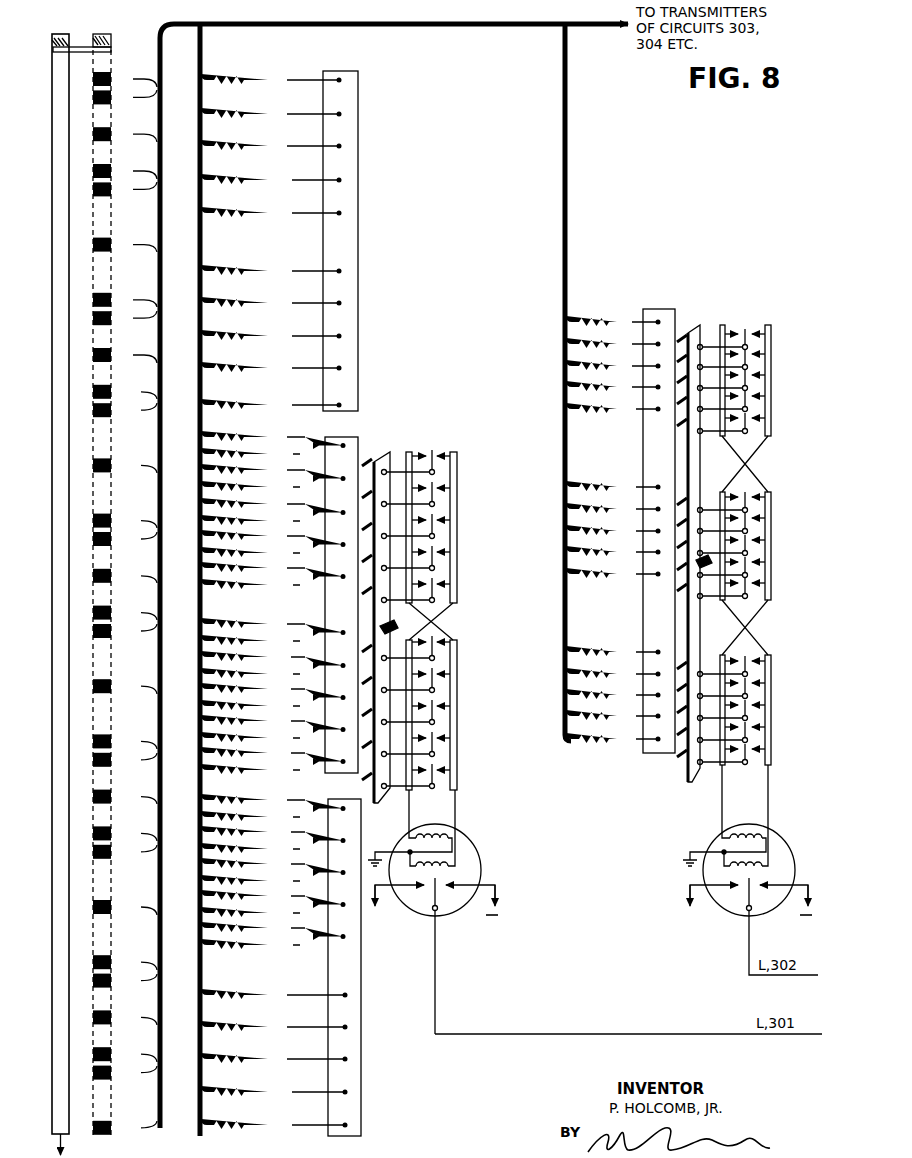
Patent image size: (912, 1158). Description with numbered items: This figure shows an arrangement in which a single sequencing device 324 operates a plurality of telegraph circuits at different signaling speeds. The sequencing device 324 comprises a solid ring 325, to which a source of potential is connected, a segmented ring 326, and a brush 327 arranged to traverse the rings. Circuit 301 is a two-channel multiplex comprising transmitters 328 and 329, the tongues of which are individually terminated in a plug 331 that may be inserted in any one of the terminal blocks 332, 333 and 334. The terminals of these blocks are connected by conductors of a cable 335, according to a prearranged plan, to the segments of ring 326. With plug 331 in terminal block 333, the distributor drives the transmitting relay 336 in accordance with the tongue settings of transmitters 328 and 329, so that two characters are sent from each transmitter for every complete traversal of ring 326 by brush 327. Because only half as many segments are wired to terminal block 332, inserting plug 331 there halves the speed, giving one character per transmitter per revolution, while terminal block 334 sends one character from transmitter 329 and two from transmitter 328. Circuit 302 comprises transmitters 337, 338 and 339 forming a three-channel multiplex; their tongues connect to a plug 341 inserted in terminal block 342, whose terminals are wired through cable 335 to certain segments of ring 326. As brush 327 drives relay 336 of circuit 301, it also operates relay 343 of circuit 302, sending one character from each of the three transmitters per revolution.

The circuit 301 is at (356, 757).
The circuit 302 is at (692, 611).
The sequencing device 324 is at (80, 41).
The solid ring 325 is at (62, 26).
The segmented ring 326 is at (109, 38).
The brush 327 is at (108, 50).
The transmitter 328 is at (461, 488).
The transmitter 329 is at (462, 673).
The plug 331 is at (378, 455).
The terminal block 332 is at (350, 134).
The terminal block 333 is at (350, 437).
The terminal block 334 is at (361, 980).
The cable 335 is at (368, 26).
The transmitting relay 336 is at (466, 846).
The transmitter 337 is at (773, 360).
The transmitter 338 is at (773, 524).
The transmitter 339 is at (773, 691).
The plug 341 is at (695, 328).
The terminal block 342 is at (664, 309).
The relay 343 is at (716, 846).